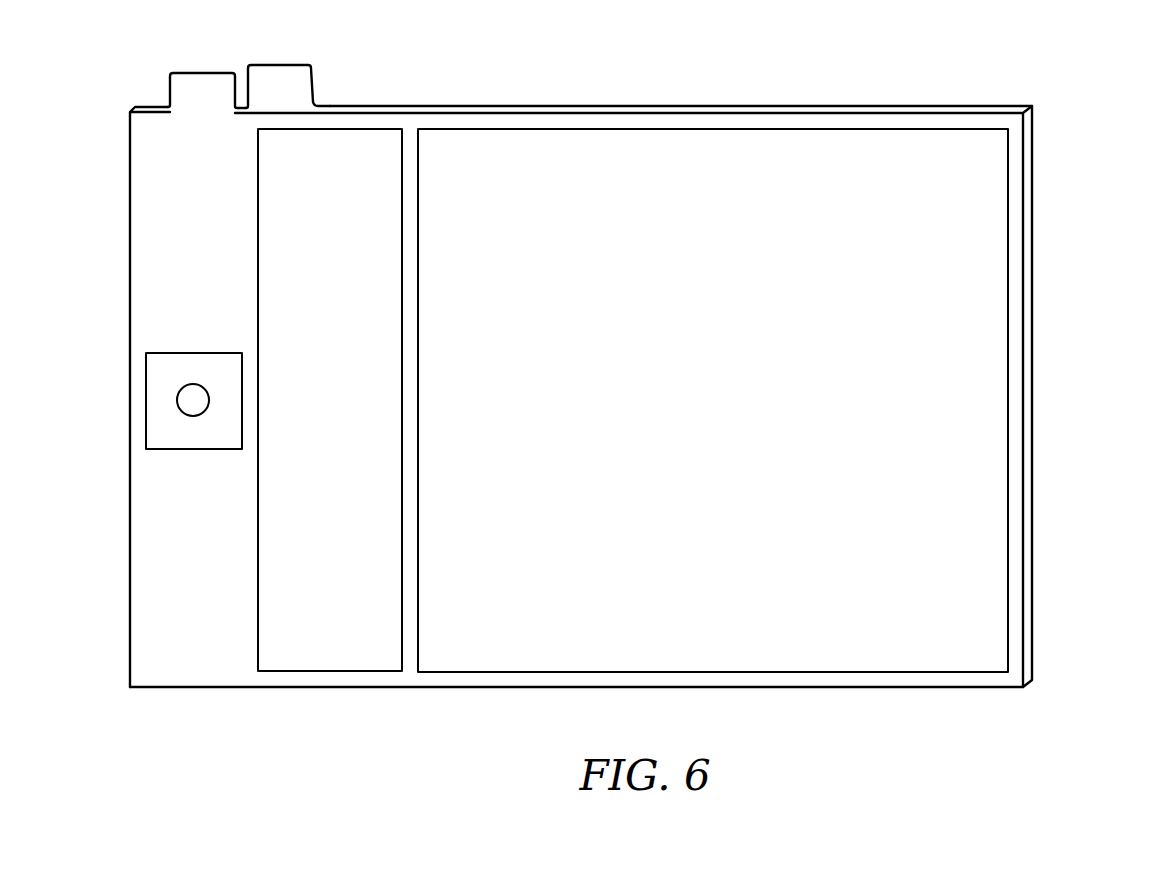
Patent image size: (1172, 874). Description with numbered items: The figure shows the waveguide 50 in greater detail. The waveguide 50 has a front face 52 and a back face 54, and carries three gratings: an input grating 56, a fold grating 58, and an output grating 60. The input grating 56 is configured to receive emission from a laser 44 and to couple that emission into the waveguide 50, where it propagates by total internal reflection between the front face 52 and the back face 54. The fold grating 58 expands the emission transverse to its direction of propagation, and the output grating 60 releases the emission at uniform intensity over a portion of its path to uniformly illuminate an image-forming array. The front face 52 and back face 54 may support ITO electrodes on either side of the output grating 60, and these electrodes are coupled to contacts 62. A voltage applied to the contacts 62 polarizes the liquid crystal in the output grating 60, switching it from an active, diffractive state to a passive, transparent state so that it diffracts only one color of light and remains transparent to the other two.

The waveguide 50 is at (1073, 180).
The front face 52 is at (143, 122).
The back face 54 is at (163, 94).
The input grating 56 is at (192, 352).
The laser 44 is at (185, 408).
The fold grating 58 is at (324, 406).
The output grating 60 is at (702, 406).
The contacts 62 is at (233, 52).